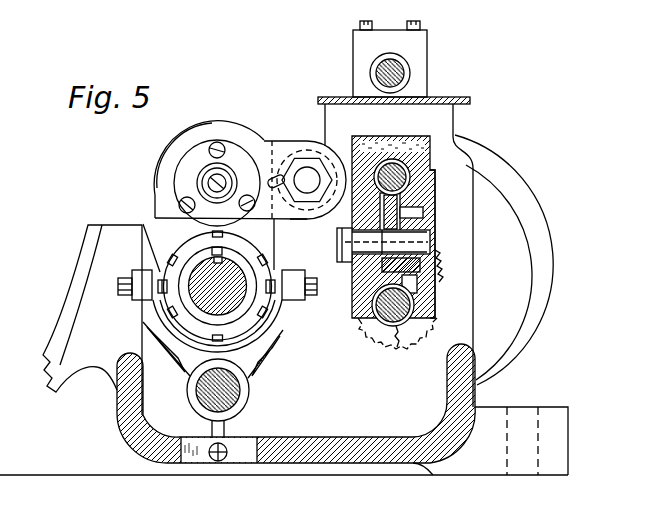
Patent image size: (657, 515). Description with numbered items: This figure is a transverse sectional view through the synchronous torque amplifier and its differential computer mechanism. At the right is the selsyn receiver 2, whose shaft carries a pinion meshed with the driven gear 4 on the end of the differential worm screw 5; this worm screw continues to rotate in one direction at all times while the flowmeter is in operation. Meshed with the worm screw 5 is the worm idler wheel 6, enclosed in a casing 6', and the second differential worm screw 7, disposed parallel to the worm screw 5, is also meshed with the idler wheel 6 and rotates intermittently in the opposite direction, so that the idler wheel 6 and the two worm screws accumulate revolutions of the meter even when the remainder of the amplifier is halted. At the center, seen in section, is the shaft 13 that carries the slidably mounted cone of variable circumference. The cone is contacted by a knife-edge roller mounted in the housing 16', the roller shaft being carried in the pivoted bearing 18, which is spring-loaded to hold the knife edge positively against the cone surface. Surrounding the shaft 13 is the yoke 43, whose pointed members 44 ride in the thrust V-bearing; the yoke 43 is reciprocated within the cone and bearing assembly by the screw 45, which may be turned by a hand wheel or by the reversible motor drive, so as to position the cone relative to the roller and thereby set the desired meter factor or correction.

The selsyn receiver 2 is at (500, 257).
The driven gear 4 is at (380, 336).
The differential worm screw 5 is at (402, 330).
The worm idler wheel 6 is at (394, 227).
The casing 6' is at (444, 244).
The second differential worm screw 7 is at (410, 168).
The shaft 13 is at (235, 296).
The housing 16' is at (230, 164).
The pivoted bearing 18 is at (273, 146).
The yoke 43 is at (146, 316).
The pointed members 44 is at (160, 279).
The screw 45 is at (236, 389).